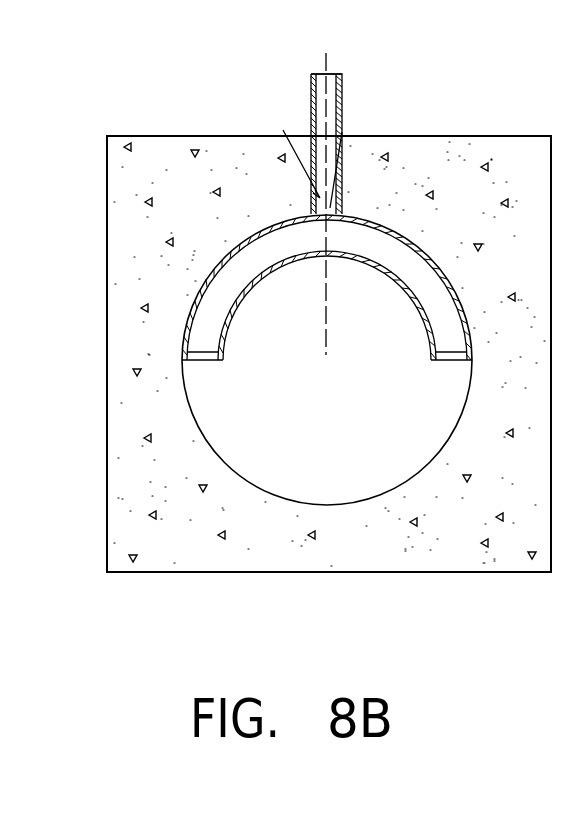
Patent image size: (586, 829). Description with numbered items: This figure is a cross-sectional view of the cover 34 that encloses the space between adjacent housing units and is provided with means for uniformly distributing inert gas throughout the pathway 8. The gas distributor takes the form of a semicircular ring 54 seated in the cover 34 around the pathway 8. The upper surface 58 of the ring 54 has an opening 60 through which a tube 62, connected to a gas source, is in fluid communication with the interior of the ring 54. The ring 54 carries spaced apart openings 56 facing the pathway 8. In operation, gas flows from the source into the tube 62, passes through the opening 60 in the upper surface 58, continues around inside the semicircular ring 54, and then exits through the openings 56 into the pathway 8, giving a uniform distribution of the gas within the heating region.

The pathway 8 is at (380, 411).
The cover 34 is at (506, 136).
The semicircular ring 54 is at (377, 216).
The openings 56 is at (232, 302).
The upper surface 58 is at (342, 137).
The opening 60 is at (283, 130).
The tube 62 is at (343, 74).